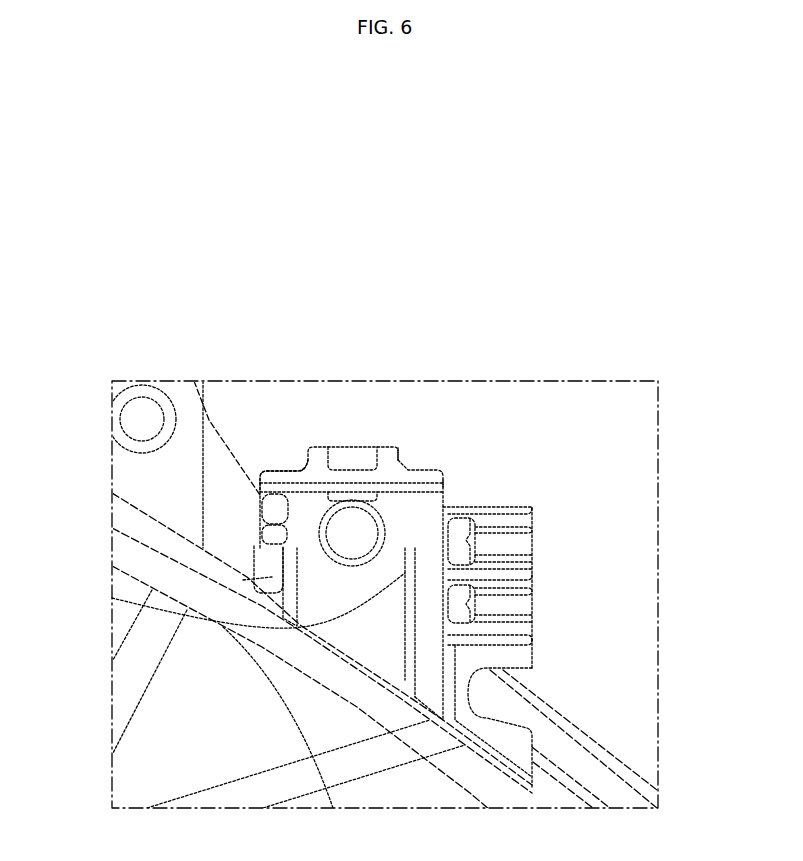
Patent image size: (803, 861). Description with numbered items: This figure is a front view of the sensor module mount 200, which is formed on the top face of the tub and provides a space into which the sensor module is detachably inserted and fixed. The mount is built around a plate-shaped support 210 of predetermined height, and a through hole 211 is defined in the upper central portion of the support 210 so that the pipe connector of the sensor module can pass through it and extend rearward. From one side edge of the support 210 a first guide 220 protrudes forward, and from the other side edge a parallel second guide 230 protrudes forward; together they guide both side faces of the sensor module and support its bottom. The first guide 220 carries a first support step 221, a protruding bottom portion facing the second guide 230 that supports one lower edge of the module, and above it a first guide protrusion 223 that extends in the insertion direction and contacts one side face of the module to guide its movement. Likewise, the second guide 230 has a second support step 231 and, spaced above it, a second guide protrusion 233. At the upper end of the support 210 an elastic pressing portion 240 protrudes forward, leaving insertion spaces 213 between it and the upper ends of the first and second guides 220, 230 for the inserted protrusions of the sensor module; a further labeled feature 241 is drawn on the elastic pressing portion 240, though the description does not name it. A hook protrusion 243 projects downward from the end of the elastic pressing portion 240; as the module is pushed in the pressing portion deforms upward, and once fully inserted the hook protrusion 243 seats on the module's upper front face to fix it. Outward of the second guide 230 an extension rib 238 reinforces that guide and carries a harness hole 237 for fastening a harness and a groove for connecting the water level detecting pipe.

The sensor module mount 200 is at (449, 463).
The support 210 is at (398, 513).
The through hole 211 is at (368, 468).
The insertion spaces 213 is at (268, 470).
The elastic pressing portion 240 is at (312, 450).
The cap recess 241 is at (346, 456).
The hook protrusion 243 is at (372, 521).
The first guide protrusion 223 is at (262, 516).
The first support step 221 is at (258, 544).
The first guide 220 is at (255, 596).
The second support step 231 is at (290, 628).
The second guide protrusion 233 is at (430, 580).
The harness hole 237 is at (468, 537).
The extension rib 238 is at (518, 542).
The second guide 230 is at (430, 685).